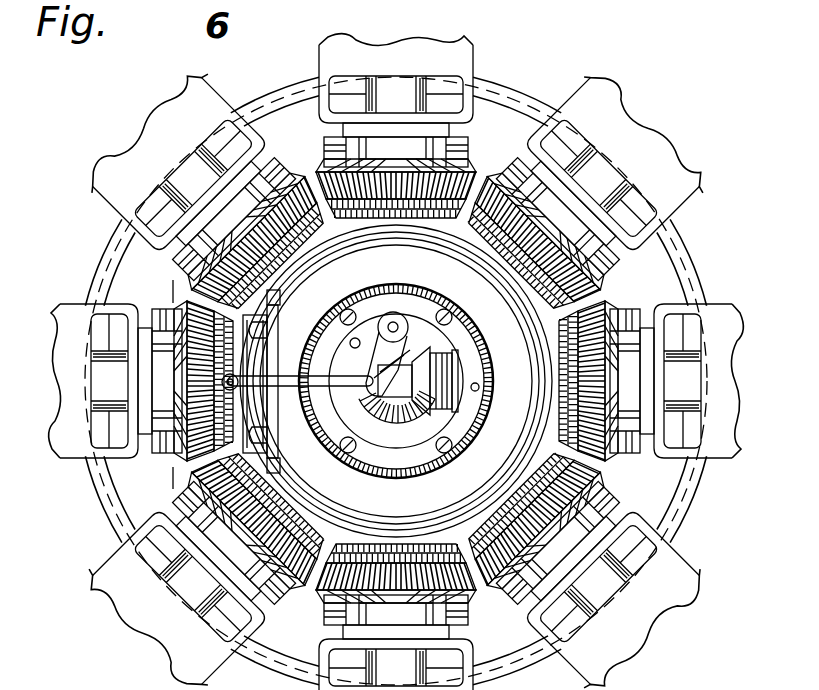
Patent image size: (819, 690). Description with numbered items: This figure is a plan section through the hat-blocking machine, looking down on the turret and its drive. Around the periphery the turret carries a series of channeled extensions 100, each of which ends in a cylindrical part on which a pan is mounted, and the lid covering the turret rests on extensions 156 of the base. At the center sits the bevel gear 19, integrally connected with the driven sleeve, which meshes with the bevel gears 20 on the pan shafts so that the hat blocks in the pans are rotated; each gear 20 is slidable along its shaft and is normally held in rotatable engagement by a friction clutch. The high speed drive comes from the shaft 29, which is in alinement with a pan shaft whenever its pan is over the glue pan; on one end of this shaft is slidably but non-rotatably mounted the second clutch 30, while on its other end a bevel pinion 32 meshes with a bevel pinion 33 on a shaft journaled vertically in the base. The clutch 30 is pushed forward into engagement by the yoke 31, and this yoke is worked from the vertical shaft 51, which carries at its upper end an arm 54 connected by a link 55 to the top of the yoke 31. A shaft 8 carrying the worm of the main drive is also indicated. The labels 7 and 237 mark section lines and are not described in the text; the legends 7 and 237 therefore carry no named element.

The channeled extensions 100 is at (592, 95).
The bevel gear 19 is at (512, 150).
The bevel gears 20 is at (417, 197).
The extensions 156 is at (404, 318).
The vertical shaft 51 is at (405, 340).
The shaft 29 is at (348, 352).
The arm 54 is at (412, 352).
The bevel pinion 32 is at (470, 385).
The bevel pinion 33 is at (400, 410).
The link 55 is at (293, 384).
The yoke 31 is at (252, 360).
The shaft 8 is at (281, 296).
The second clutch 30 is at (263, 330).
The section line 7 is at (159, 292).
The section line 237 is at (165, 482).